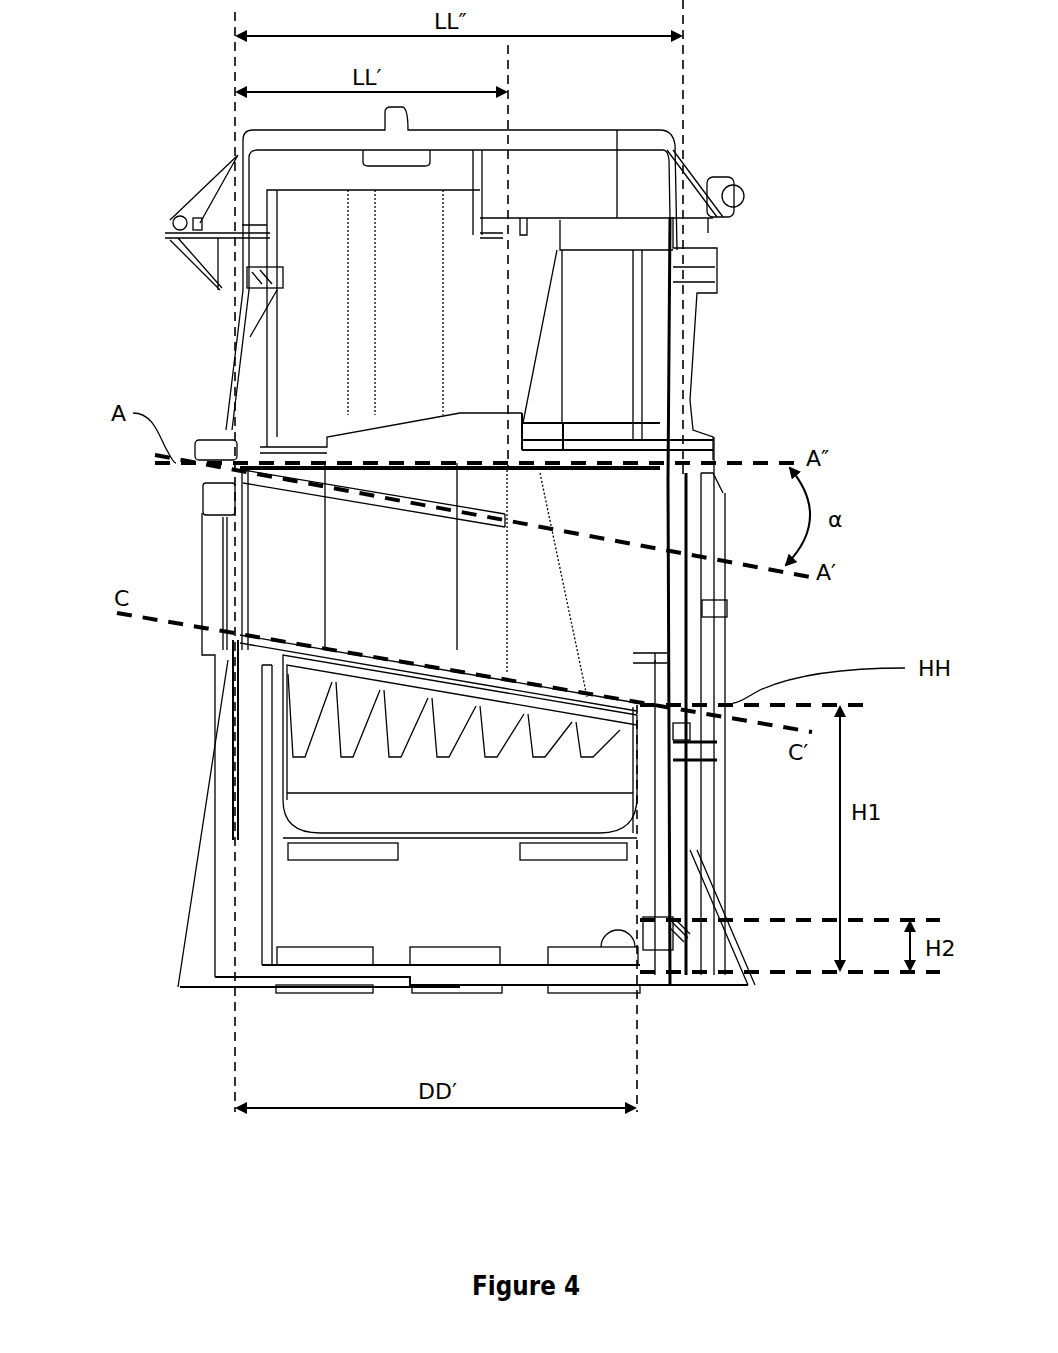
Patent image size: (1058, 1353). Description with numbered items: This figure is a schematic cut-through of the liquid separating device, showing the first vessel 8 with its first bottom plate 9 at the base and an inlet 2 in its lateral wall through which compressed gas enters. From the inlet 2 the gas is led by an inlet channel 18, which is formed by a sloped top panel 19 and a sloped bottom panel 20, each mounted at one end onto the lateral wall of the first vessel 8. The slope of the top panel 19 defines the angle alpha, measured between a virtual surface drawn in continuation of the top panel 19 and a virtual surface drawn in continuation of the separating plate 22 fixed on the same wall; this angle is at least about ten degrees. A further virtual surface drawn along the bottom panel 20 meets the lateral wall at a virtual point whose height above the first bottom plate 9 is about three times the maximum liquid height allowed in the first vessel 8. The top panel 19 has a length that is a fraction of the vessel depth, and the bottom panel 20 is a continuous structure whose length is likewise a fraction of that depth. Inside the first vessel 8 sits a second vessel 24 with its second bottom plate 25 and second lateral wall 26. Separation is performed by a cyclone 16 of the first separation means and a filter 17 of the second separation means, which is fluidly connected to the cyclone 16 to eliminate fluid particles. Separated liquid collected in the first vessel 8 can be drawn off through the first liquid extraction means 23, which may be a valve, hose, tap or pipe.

The inlet 2 is at (213, 557).
The first vessel 8 is at (222, 703).
The first bottom plate 9 is at (257, 980).
The cyclone 16 is at (308, 687).
The filter 17 is at (293, 377).
The inlet channel 18 is at (295, 547).
The top panel 19 is at (462, 503).
The bottom panel 20 is at (425, 663).
The separating plate 22 is at (268, 462).
The first liquid extraction means 23 is at (690, 928).
The second vessel 24 is at (637, 789).
The second bottom plate 25 is at (603, 838).
The second lateral wall 26 is at (282, 765).